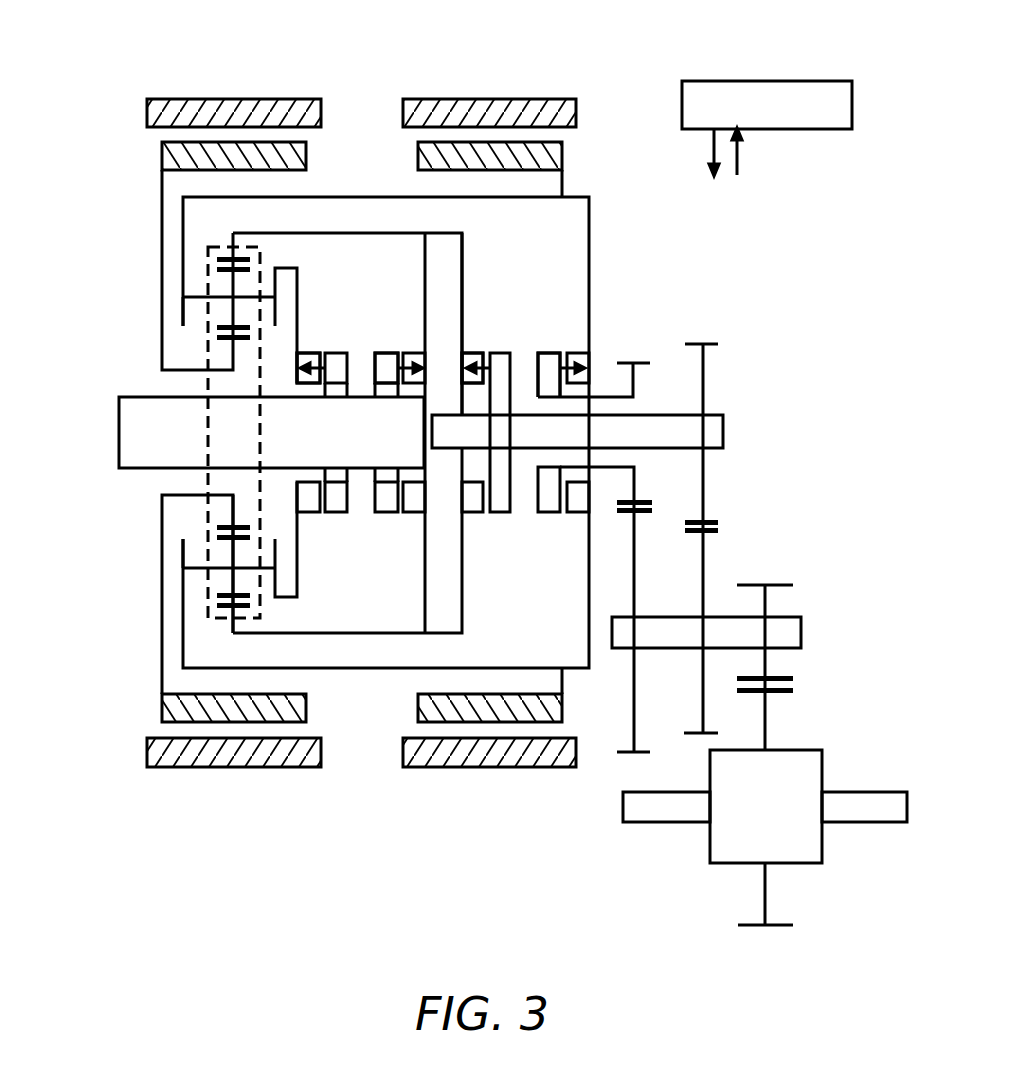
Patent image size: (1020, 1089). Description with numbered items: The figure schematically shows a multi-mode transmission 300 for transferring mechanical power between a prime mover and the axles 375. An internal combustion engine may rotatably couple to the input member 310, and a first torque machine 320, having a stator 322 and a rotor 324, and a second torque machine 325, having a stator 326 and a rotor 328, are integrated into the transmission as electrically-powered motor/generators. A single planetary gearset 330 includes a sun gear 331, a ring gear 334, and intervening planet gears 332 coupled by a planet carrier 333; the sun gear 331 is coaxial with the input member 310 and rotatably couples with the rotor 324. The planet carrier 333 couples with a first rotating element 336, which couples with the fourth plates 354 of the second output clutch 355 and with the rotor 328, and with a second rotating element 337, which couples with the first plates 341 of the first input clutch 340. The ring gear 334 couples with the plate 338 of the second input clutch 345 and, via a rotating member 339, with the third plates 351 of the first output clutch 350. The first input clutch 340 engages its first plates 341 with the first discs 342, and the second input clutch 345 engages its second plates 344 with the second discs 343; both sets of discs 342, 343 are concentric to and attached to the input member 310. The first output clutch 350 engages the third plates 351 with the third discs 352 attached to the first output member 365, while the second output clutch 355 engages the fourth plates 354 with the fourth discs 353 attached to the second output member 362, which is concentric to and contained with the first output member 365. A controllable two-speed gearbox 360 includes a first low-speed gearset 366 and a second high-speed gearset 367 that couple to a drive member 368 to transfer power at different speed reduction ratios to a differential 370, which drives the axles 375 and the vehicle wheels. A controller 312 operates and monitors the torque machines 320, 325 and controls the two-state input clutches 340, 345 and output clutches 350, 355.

The multi-mode transmission 300 is at (813, 185).
The input member 310 is at (133, 435).
The controller 312 is at (787, 118).
The first torque machine 320 is at (188, 99).
The stator 322 is at (147, 113).
The rotor 324 is at (162, 157).
The second torque machine 325 is at (536, 95).
The stator 326 is at (576, 113).
The rotor 328 is at (562, 156).
The single planetary gearset 330 is at (166, 416).
The sun gear 331 is at (225, 333).
The planet gears 332 is at (230, 296).
The planet carrier 333 is at (183, 317).
The ring gear 334 is at (222, 262).
The first rotating element 336 is at (589, 222).
The second rotating element 337 is at (298, 277).
The plate 338 is at (428, 257).
The rotating member 339 is at (465, 257).
The first input clutch 340 is at (310, 351).
The first plates 341 is at (307, 385).
The first discs 342 is at (334, 397).
The second discs 343 is at (387, 397).
The second plates 344 is at (414, 352).
The second input clutch 345 is at (381, 351).
The first output clutch 350 is at (475, 351).
The third plates 351 is at (474, 385).
The third discs 352 is at (513, 398).
The fourth discs 353 is at (538, 382).
The fourth plates 354 is at (590, 363).
The second output clutch 355 is at (549, 351).
The two-speed gearbox 360 is at (665, 485).
The second output member 362 is at (607, 396).
The first output member 365 is at (723, 432).
The first low-speed gearset 366 is at (652, 505).
The second high-speed gearset 367 is at (718, 526).
The drive member 368 is at (801, 632).
The differential 370 is at (787, 820).
The axles 375 is at (663, 810).